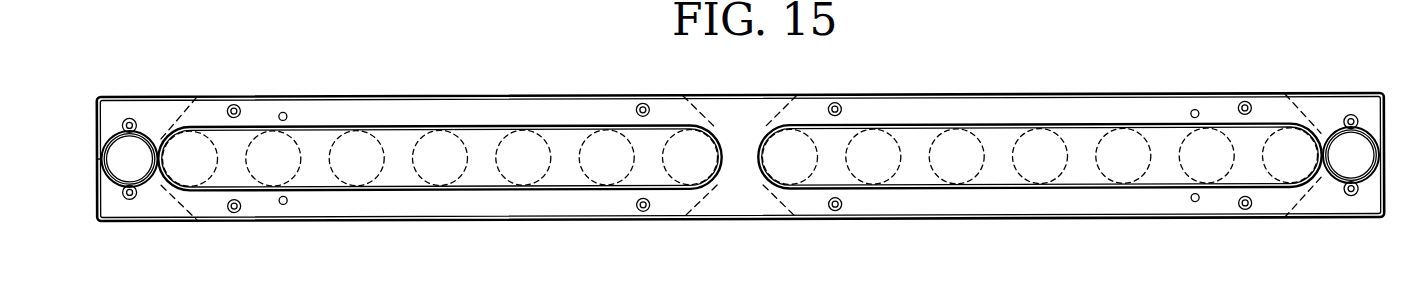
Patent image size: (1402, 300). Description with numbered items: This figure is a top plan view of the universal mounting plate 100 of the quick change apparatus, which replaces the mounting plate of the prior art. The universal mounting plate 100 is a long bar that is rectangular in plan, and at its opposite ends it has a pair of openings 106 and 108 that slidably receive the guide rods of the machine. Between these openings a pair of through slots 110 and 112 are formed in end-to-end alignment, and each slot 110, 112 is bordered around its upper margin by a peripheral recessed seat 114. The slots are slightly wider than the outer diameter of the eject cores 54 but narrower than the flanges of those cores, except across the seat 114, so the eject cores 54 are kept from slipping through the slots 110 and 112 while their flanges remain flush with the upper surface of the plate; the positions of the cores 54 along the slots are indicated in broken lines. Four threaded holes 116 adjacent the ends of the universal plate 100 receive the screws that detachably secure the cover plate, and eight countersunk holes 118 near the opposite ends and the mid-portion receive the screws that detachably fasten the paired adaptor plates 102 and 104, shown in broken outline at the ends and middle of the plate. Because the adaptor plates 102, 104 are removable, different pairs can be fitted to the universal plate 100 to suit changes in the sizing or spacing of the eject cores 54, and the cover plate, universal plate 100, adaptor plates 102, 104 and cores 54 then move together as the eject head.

The eject cores 54 is at (467, 141).
The universal mounting plate 100 is at (907, 87).
The adaptor plate 102 is at (177, 117).
The adaptor plate 104 is at (1303, 110).
The opening 106 is at (143, 173).
The opening 108 is at (1365, 168).
The through slot 110 is at (398, 130).
The through slot 112 is at (1082, 130).
The recessed seat 114 is at (408, 190).
The threaded holes 116 is at (283, 112).
The countersunk holes 118 is at (234, 104).